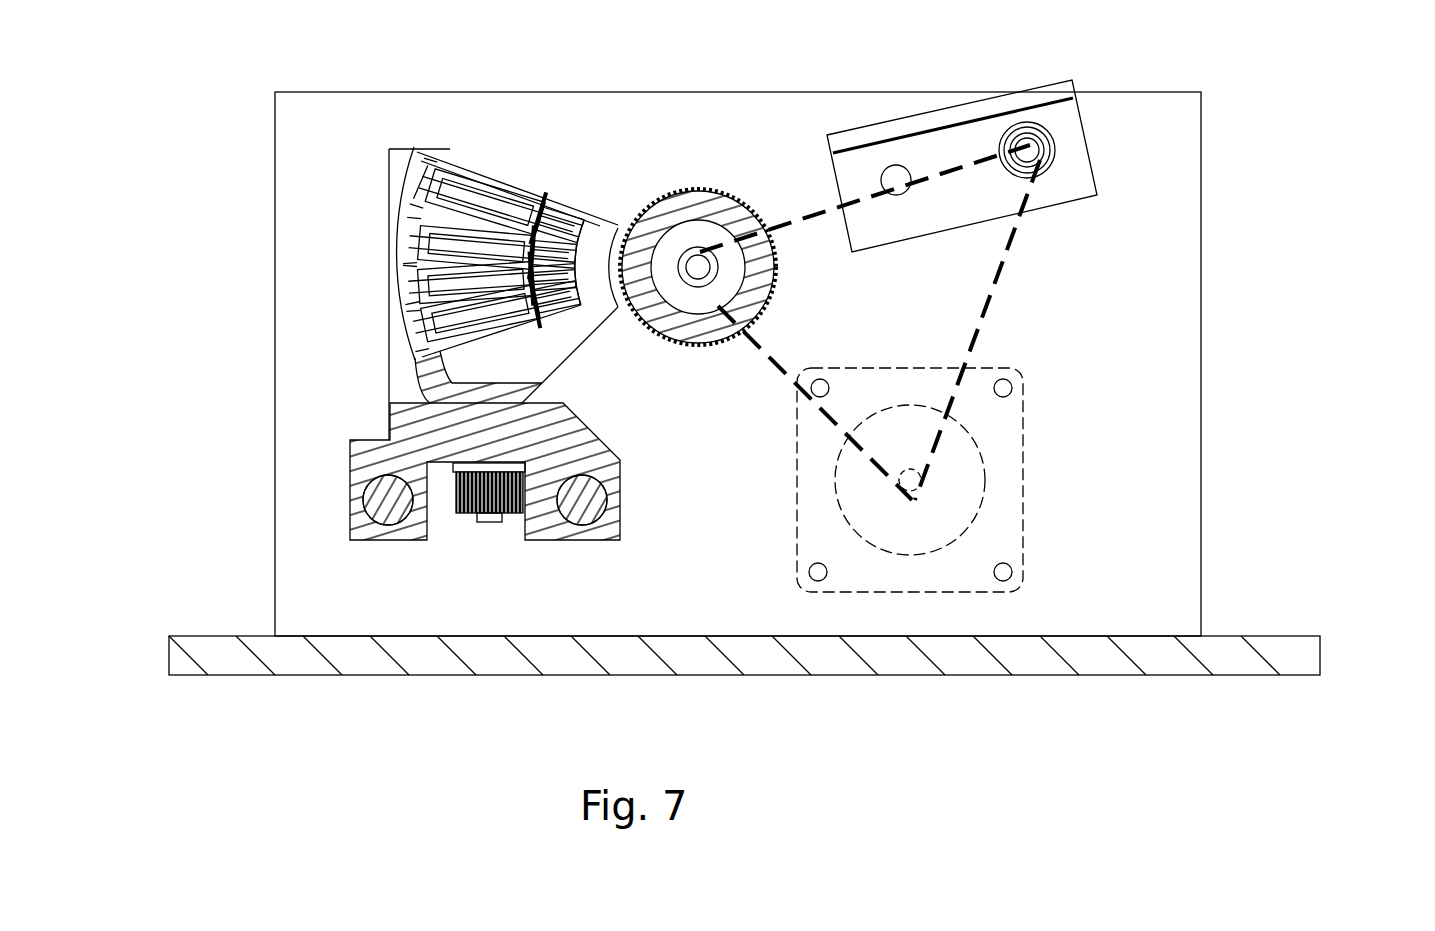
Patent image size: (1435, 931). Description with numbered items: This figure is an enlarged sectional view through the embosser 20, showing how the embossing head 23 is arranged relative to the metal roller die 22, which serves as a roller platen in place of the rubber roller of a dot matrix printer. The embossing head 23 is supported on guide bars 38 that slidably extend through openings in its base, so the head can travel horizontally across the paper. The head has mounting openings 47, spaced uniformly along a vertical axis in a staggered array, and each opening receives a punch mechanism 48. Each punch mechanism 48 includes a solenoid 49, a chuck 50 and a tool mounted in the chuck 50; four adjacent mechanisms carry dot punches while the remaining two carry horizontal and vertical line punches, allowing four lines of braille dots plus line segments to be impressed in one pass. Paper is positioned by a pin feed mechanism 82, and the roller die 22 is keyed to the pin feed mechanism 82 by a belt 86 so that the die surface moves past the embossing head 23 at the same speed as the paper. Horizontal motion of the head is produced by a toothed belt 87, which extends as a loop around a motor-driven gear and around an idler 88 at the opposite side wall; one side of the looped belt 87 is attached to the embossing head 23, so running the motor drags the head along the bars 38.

The embosser 20 is at (1235, 432).
The roller die 22 is at (717, 187).
The embossing head 23 is at (350, 468).
The guide bars 38 is at (364, 512).
The mounting openings 47 is at (413, 163).
The punch mechanisms 48 is at (420, 255).
The solenoid 49 is at (492, 193).
The chuck 50 is at (610, 300).
The pin feed mechanism 82 is at (1068, 180).
The belt 86 is at (985, 318).
The toothed belt 87 is at (452, 510).
The idler 88 is at (508, 516).